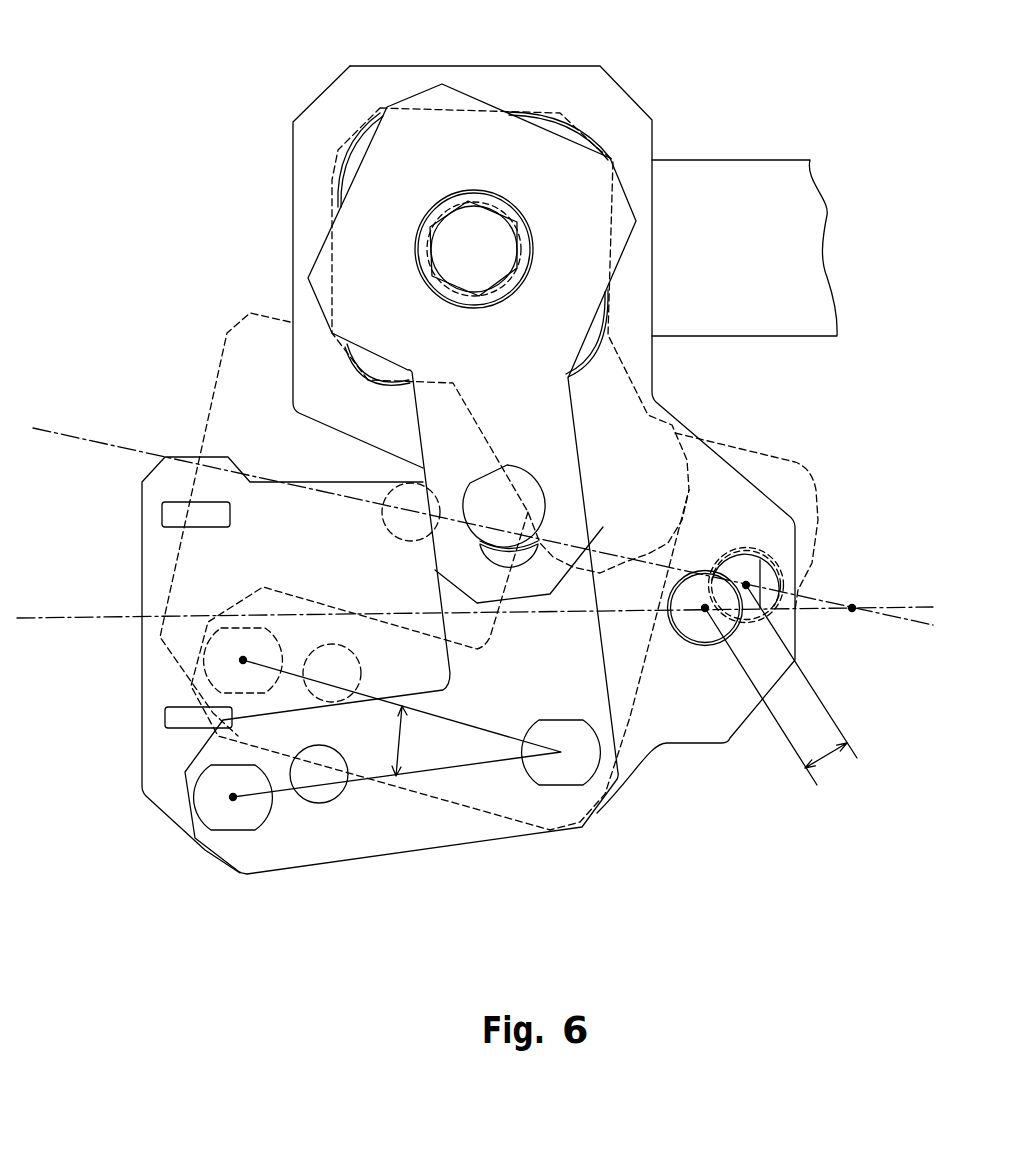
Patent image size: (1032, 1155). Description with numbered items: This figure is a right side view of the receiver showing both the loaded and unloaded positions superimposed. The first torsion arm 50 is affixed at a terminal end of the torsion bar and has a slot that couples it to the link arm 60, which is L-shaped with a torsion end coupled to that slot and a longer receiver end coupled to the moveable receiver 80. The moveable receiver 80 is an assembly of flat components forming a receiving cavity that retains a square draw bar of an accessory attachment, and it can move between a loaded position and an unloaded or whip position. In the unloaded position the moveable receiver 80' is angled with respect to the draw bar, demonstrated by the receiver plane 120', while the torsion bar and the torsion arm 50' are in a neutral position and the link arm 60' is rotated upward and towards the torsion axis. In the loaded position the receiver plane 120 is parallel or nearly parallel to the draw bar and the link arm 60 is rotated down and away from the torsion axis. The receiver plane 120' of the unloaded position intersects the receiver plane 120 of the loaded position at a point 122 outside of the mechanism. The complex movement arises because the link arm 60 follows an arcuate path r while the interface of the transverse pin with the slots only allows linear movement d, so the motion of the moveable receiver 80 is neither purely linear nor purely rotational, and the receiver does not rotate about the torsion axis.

The first torsion arm 50 is at (565, 414).
The first torsion arm (unloaded position) 50' is at (725, 488).
The link arm 60 is at (410, 520).
The link arm (unloaded position) 60' is at (457, 469).
The moveable receiver 80 is at (219, 665).
The moveable receiver (unloaded position) 80' is at (223, 470).
The receiver plane 120 is at (475, 554).
The receiver plane (unloaded position) 120' is at (483, 472).
The point 122 is at (853, 607).
The arcuate path r is at (397, 737).
The linear movement d is at (826, 757).